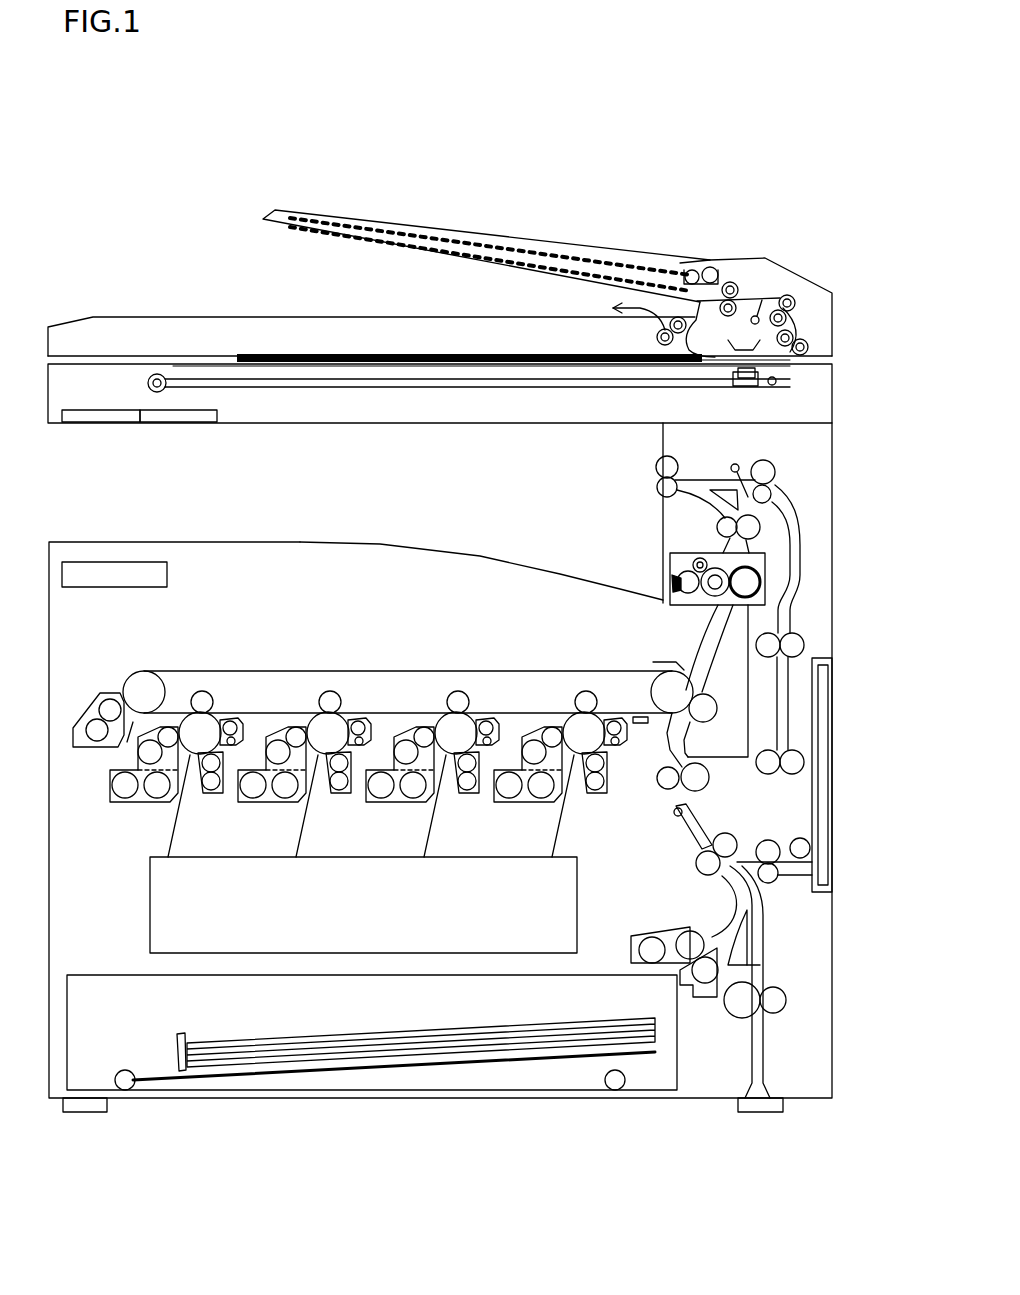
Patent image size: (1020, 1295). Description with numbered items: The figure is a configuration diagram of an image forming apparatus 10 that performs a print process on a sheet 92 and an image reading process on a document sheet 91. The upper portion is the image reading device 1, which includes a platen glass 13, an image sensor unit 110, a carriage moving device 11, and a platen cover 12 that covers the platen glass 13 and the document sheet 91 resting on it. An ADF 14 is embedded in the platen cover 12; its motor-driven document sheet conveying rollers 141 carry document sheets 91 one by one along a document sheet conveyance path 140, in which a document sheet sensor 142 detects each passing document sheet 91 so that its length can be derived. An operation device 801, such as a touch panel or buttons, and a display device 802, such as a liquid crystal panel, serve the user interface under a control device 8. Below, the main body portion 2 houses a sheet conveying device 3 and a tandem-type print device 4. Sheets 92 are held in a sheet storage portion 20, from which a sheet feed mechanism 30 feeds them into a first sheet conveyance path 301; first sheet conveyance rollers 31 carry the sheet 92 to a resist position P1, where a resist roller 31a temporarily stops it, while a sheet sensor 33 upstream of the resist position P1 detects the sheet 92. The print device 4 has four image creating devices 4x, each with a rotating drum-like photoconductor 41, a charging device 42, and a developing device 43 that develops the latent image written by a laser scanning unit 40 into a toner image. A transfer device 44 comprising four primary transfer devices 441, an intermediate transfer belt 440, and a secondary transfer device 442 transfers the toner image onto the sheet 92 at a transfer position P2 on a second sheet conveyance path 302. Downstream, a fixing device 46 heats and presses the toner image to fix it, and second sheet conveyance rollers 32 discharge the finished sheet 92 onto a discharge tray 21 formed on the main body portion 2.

The image forming apparatus 10 is at (92, 196).
The image reading device 1 is at (898, 325).
The carriage moving device 11 is at (774, 378).
The platen cover 12 is at (836, 338).
The platen glass 13 is at (770, 424).
The image sensor unit 110 is at (750, 388).
The ADF 14 is at (824, 315).
The document sheet conveyance path 140 is at (796, 316).
The document sheet conveying rollers 141 is at (731, 282).
The document sheet sensor 142 is at (752, 322).
The document sheet 91 is at (480, 247).
The operation device 801 is at (62, 421).
The display device 802 is at (222, 421).
The main body portion 2 is at (62, 539).
The discharge tray 21 is at (445, 546).
The control device 8 is at (62, 576).
The print device 4 is at (62, 648).
The image creating device 4x is at (187, 699).
The photoconductor 41 is at (220, 756).
The charging device 42 is at (205, 795).
The developing device 43 is at (115, 803).
The transfer device 44 is at (119, 690).
The intermediate transfer belt 440 is at (512, 670).
The primary transfer devices 441 is at (205, 692).
The secondary transfer device 442 is at (716, 716).
The laser scanning unit 40 is at (148, 908).
The fixing device 46 is at (766, 563).
The sheet conveying device 3 is at (791, 973).
The sheet feed mechanism 30 is at (696, 1009).
The first sheet conveyance path 301 is at (700, 843).
The second sheet conveyance path 302 is at (718, 633).
The first sheet conveyance rollers 31 is at (698, 865).
The resist roller 31a is at (708, 778).
The second sheet conveyance rollers 32 is at (656, 462).
The sheet sensor 33 is at (675, 814).
The sheet storage portion 20 is at (67, 1058).
The sheet 92 is at (372, 1024).
The resist position P1 is at (673, 767).
The transfer position P2 is at (696, 700).